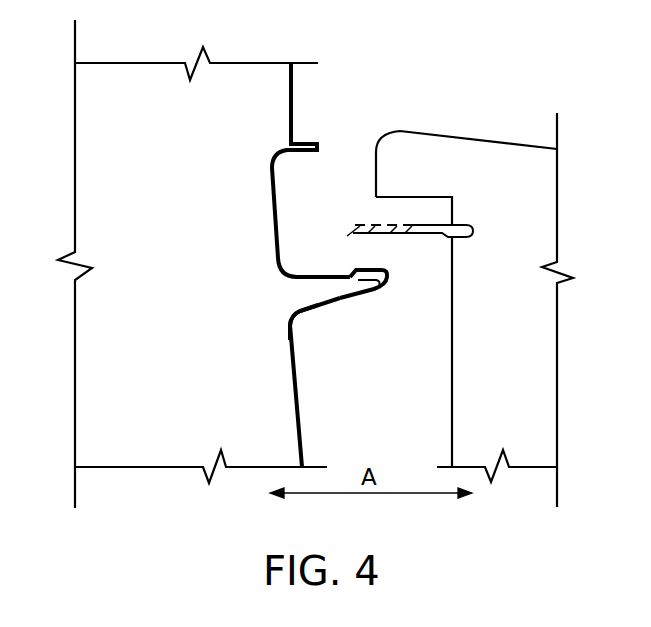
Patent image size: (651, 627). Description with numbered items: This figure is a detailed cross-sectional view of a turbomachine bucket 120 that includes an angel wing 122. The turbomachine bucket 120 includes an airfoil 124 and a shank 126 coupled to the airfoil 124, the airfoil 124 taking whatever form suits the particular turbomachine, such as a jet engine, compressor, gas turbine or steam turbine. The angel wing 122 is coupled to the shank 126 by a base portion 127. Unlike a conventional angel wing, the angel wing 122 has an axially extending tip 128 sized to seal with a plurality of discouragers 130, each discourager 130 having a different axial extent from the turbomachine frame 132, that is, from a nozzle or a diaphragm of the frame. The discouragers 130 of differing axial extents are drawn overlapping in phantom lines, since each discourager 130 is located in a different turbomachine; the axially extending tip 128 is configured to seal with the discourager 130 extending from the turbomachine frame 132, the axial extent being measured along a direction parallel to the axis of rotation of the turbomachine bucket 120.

The turbomachine bucket 120 is at (250, 208).
The angel wing 122 is at (338, 285).
The airfoil 124 is at (248, 95).
The shank 126 is at (102, 253).
The base portion 127 is at (303, 297).
The axially extending tip 128 is at (386, 277).
The discourager 130 is at (393, 222).
The turbomachine frame 132 is at (483, 165).